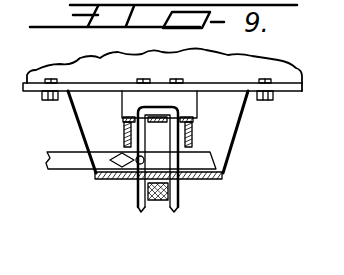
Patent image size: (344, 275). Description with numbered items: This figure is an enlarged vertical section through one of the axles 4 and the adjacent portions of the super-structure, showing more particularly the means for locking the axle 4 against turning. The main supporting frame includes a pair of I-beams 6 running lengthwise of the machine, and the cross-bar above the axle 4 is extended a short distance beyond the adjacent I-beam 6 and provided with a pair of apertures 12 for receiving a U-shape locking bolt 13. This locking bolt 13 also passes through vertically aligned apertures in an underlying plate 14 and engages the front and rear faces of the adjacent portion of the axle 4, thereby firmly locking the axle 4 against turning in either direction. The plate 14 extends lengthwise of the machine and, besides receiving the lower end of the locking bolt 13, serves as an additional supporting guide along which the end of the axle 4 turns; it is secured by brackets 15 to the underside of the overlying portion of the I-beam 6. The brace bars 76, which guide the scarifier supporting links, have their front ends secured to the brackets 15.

The I-beam 6 is at (279, 72).
The apertures 12 is at (122, 119).
The brackets 15 is at (207, 160).
The underlying plate 14 is at (99, 181).
The brace bars 76 is at (52, 167).
The axle 4 is at (155, 201).
The U-shape locking bolt 13 is at (150, 153).